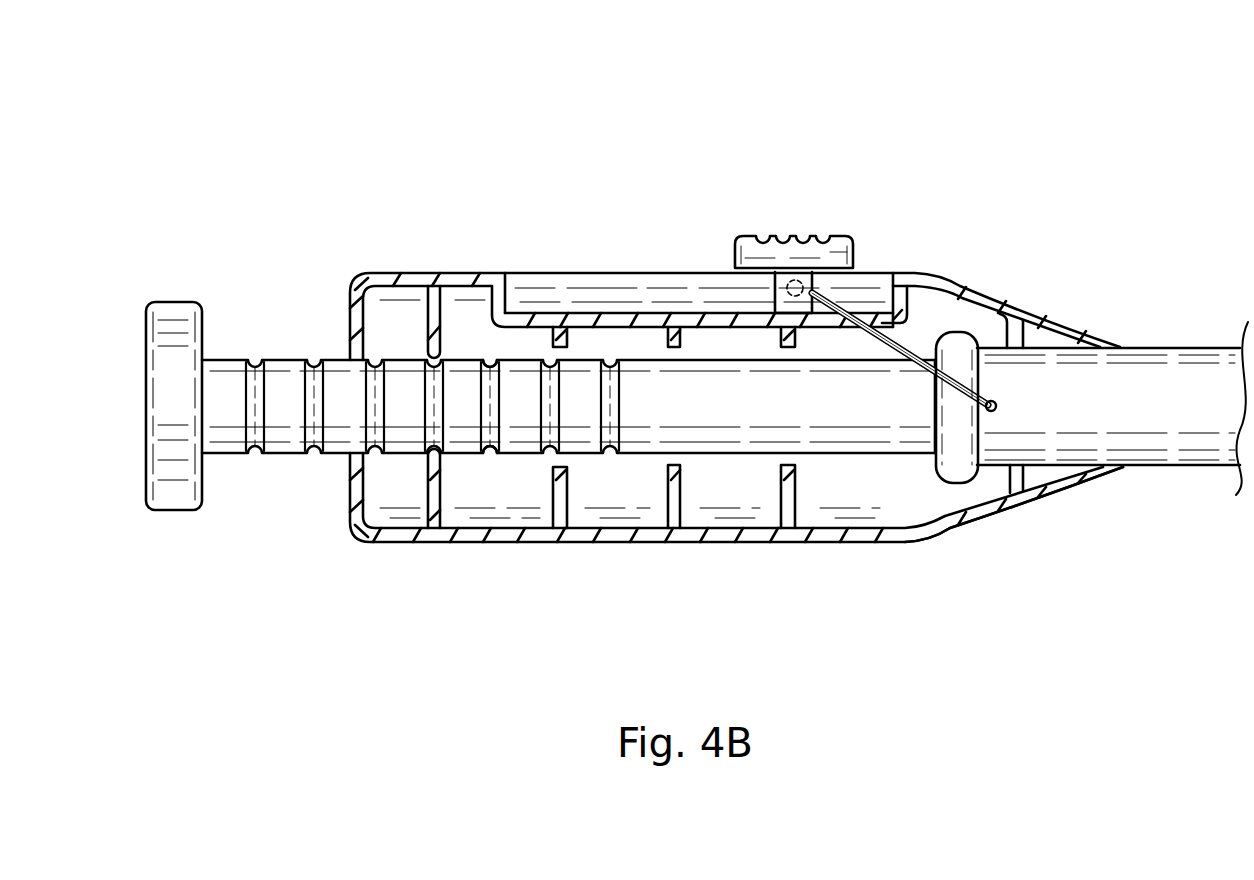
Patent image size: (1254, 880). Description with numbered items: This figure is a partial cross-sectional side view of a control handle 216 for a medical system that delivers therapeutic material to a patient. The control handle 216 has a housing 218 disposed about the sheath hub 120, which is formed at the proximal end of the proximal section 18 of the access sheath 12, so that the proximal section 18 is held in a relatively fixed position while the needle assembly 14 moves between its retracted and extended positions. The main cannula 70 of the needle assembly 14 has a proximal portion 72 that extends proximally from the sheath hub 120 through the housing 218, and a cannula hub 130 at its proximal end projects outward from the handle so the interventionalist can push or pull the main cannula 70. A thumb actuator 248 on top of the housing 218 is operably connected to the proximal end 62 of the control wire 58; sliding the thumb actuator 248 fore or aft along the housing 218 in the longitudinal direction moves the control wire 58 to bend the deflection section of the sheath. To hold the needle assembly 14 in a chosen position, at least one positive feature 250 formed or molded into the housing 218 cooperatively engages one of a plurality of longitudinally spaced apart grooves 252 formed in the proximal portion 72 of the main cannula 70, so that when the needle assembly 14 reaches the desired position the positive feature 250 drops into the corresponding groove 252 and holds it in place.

The control handle 216 is at (922, 146).
The cannula hub 130 is at (173, 483).
The needle assembly 14 is at (658, 405).
The main cannula 70 is at (732, 408).
The longitudinally spaced apart grooves 252 is at (305, 405).
The proximal portion 72 is at (530, 403).
The positive feature 250 is at (427, 333).
The thumb actuator 248 is at (777, 238).
The proximal end 62 is at (813, 295).
The control wire 58 is at (913, 348).
The sheath hub 120 is at (952, 460).
The housing 218 is at (958, 538).
The access sheath 12 is at (1222, 415).
The proximal section 18 is at (1140, 415).